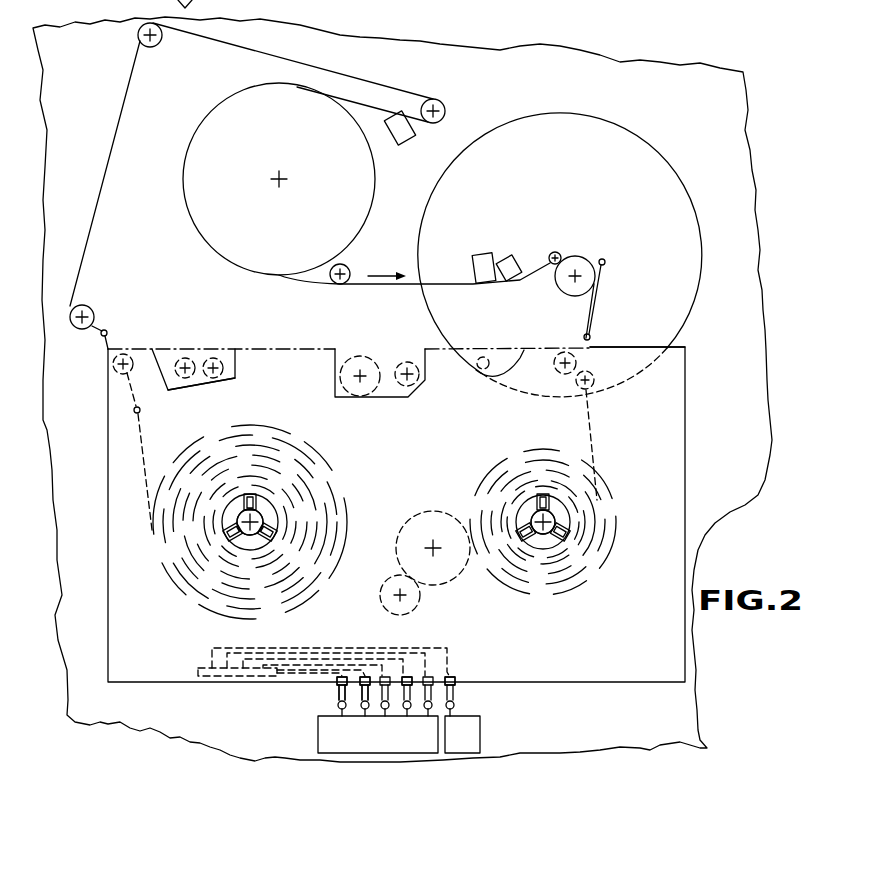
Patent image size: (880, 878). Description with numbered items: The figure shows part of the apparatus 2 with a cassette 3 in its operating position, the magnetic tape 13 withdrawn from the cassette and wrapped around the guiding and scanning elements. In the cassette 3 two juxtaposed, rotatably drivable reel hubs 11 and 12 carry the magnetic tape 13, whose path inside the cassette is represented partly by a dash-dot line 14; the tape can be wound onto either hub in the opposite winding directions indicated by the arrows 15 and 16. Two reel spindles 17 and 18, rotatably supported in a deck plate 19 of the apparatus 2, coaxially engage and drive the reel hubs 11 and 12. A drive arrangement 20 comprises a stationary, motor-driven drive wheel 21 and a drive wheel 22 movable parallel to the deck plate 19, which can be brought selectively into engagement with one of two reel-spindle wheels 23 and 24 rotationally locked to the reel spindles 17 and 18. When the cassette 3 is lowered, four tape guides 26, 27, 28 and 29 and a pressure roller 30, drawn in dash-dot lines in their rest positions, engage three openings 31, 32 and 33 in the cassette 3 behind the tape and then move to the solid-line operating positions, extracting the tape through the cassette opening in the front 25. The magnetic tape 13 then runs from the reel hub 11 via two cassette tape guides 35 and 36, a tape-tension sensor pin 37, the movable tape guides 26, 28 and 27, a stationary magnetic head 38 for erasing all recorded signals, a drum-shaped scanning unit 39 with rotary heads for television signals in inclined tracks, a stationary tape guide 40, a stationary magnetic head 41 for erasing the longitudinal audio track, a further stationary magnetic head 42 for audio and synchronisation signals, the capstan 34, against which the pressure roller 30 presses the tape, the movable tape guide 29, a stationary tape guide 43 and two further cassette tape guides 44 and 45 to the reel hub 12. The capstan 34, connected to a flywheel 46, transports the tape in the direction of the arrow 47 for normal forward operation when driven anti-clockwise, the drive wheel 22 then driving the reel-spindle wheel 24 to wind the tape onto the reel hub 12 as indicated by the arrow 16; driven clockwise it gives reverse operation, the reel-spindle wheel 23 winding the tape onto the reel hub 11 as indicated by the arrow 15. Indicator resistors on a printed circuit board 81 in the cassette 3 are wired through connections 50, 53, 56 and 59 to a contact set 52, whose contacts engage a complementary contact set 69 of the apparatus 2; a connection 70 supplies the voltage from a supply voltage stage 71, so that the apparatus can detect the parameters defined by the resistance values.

The apparatus 2 is at (645, 51).
The cassette 3 is at (688, 465).
The reel hub 11 is at (247, 538).
The reel hub 12 is at (551, 548).
The magnetic tape 13 is at (591, 446).
The dash-dot line 14 is at (237, 368).
The arrow 15 is at (178, 570).
The arrow 16 is at (611, 570).
The reel spindle 17 is at (262, 508).
The reel spindle 18 is at (533, 517).
The deck plate 19 is at (550, 62).
The drive arrangement 20 is at (452, 593).
The drive wheel 21 is at (388, 580).
The drive wheel 22 is at (430, 512).
The reel-spindle wheel 23 is at (320, 505).
The reel-spindle wheel 24 is at (478, 492).
The front 25 is at (642, 346).
The tape guide 26 is at (92, 308).
The tape guide 27 is at (444, 107).
The tape guide 28 is at (138, 37).
The tape guide 29 is at (605, 260).
The pressure roller 30 is at (560, 288).
The opening 31 is at (190, 385).
The opening 32 is at (392, 397).
The opening 33 is at (520, 360).
The capstan 34 is at (556, 252).
The tape guide 35 is at (135, 414).
The tape guide 36 is at (130, 372).
The tape-tension sensor pin 37 is at (100, 335).
The stationary magnetic head 38 is at (405, 141).
The drum-shaped scanning unit 39 is at (184, 160).
The stationary tape guide 40 is at (347, 267).
The stationary magnetic head 41 is at (476, 262).
The stationary magnetic head 42 is at (510, 260).
The stationary tape guide 43 is at (590, 334).
The tape guide 44 is at (556, 370).
The tape guide 45 is at (592, 378).
The flywheel 46 is at (646, 164).
The arrow 47 is at (374, 275).
The connection 50 is at (452, 676).
The contact set 52 is at (460, 673).
The connection 53 is at (342, 676).
The connection 56 is at (398, 658).
The connection 59 is at (366, 676).
The complementary contact set 69 is at (462, 690).
The connection 70 is at (325, 732).
The supply voltage stage 71 is at (470, 738).
The printed circuit board 81 is at (200, 670).